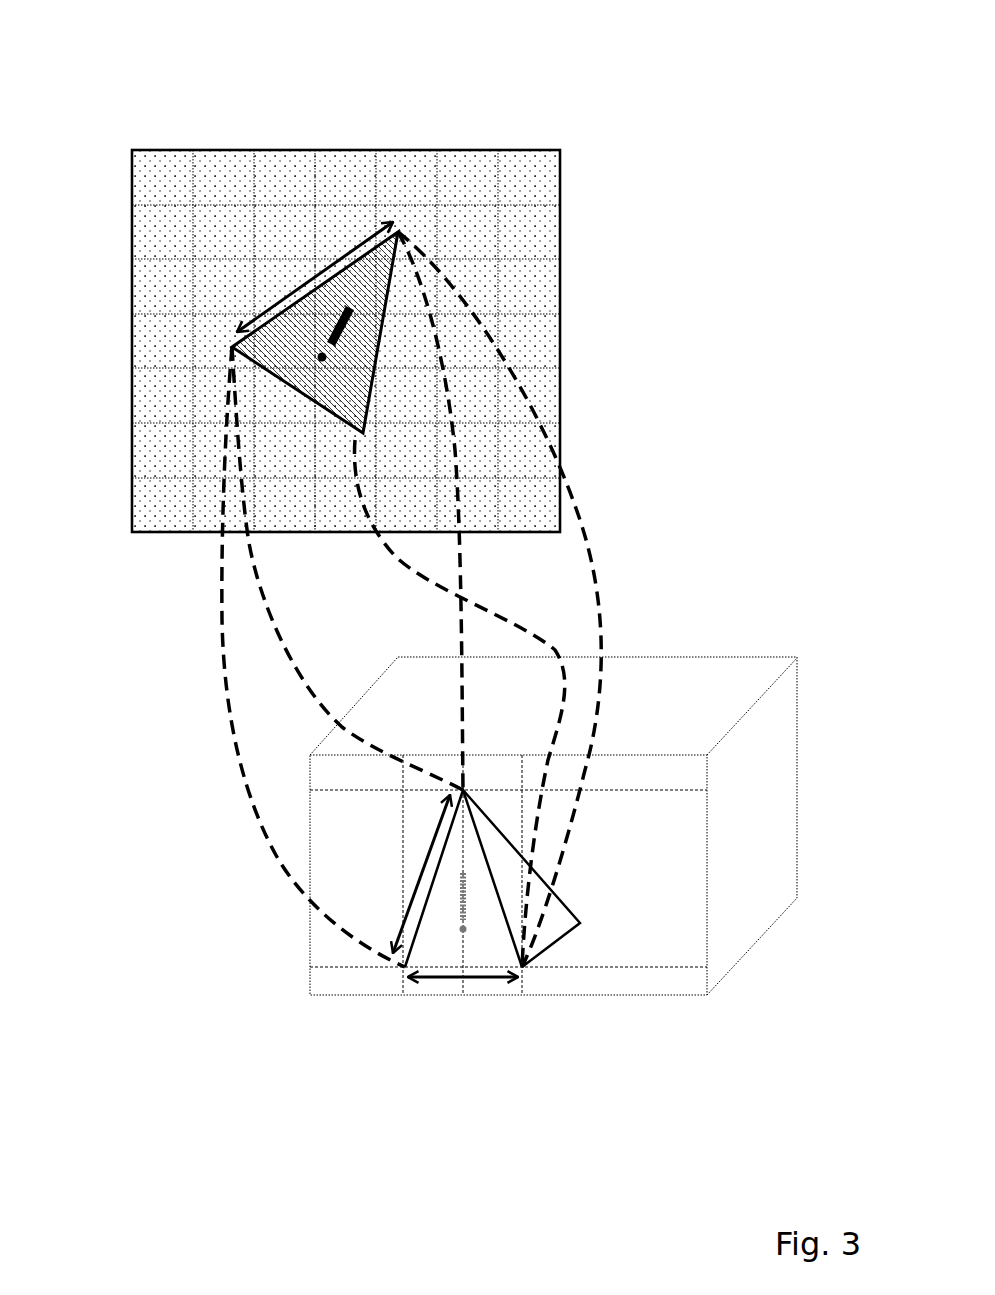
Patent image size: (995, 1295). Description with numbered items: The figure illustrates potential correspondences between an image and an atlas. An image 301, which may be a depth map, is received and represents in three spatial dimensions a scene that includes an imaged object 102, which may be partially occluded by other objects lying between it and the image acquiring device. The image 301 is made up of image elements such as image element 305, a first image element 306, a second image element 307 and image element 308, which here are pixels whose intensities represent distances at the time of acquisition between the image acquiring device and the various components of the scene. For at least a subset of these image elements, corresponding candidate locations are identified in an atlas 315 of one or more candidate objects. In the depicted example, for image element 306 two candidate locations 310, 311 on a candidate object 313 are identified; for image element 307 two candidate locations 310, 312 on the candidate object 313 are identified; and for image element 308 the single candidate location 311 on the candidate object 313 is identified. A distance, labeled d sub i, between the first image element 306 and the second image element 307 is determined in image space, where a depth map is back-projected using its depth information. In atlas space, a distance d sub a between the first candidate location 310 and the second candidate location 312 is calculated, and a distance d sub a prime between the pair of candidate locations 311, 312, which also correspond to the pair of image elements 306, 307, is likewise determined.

The image 301 is at (522, 148).
The image element 305 is at (170, 173).
The imaged object 102 is at (390, 289).
The first image element 306 is at (405, 222).
The second image element 307 is at (224, 340).
The image element 308 is at (363, 457).
The first candidate location 310 is at (463, 790).
The candidate location 311 is at (523, 967).
The second candidate location 312 is at (405, 967).
The candidate object 313 is at (560, 900).
The atlas 315 is at (740, 958).